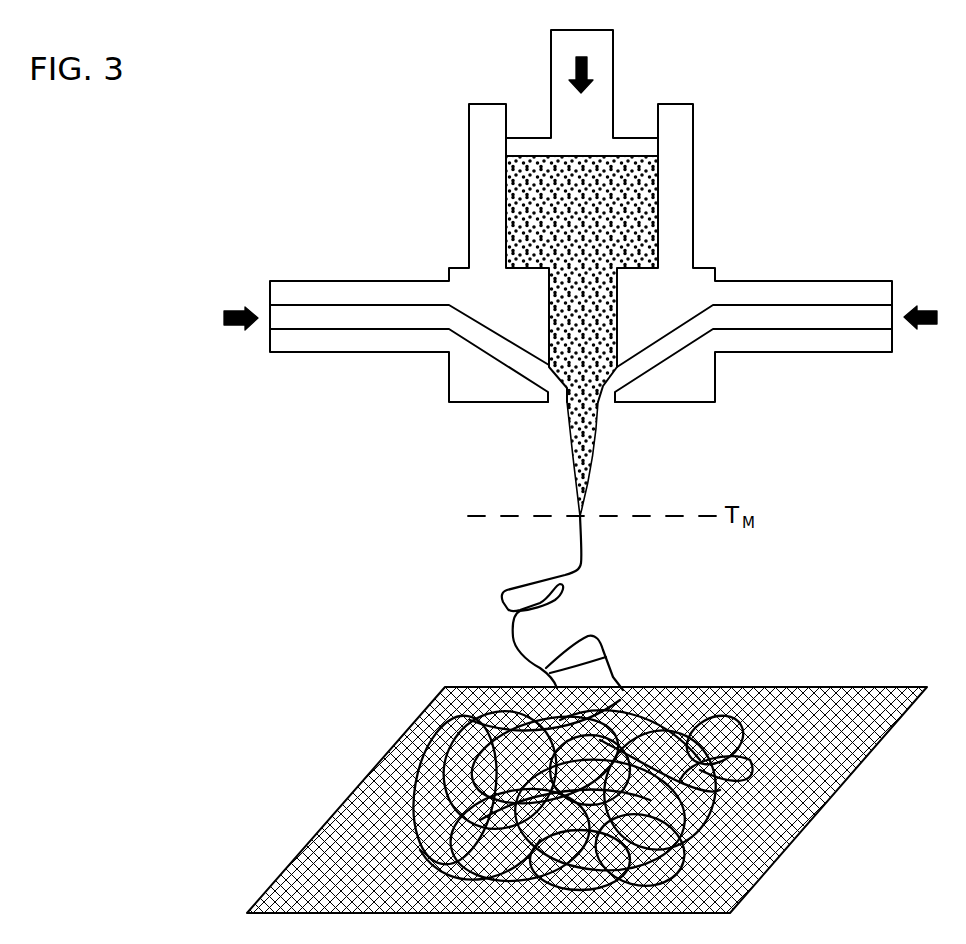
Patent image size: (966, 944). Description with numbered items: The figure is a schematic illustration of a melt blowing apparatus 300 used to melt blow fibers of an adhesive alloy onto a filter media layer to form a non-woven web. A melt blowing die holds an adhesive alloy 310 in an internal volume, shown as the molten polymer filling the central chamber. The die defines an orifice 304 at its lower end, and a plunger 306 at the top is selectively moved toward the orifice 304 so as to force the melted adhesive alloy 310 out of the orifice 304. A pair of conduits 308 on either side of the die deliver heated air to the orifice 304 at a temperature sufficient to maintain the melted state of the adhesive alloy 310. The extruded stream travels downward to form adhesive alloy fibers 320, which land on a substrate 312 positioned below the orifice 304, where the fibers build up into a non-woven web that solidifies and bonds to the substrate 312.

The melt blowing apparatus 300 is at (440, 52).
The orifice 304 is at (682, 173).
The plunger 306 is at (602, 75).
The conduits 308 is at (786, 338).
The adhesive alloy 310 is at (652, 217).
The substrate 312 is at (807, 787).
The adhesive alloy fibers 320 is at (610, 660).